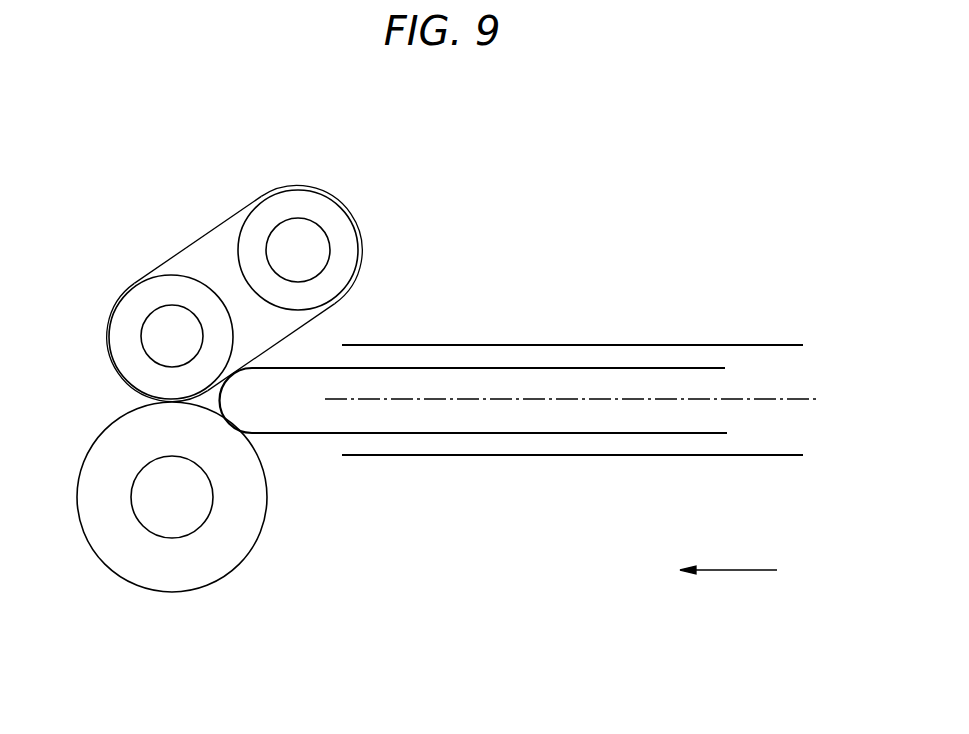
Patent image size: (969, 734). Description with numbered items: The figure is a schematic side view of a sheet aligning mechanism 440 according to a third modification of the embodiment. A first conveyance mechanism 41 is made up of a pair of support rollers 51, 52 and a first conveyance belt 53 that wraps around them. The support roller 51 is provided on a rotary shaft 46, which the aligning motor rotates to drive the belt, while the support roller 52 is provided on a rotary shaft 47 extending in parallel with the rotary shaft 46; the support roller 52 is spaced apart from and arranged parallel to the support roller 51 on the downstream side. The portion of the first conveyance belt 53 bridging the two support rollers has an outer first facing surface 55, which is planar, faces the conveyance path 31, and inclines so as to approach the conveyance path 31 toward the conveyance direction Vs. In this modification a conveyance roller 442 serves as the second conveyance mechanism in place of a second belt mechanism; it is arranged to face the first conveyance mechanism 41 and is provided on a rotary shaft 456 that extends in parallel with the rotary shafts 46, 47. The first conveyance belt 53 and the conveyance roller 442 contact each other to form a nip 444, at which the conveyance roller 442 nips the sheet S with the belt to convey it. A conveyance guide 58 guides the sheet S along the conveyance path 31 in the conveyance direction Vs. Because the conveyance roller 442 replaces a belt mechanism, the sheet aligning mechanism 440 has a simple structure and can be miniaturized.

The sheet aligning mechanism 440 is at (318, 128).
The first conveyance mechanism 41 is at (268, 181).
The first conveyance belt 53 is at (227, 215).
The first facing surface 55 is at (298, 337).
The support roller 51 is at (338, 217).
The rotary shaft 46 is at (331, 250).
The support roller 52 is at (134, 355).
The rotary shaft 47 is at (150, 307).
The conveyance roller 442 is at (244, 561).
The rotary shaft 456 is at (167, 538).
The nip 444 is at (171, 405).
The sheet S is at (587, 434).
The conveyance guide 58 is at (776, 345).
The conveyance path 31 is at (791, 399).
The conveyance direction Vs is at (728, 587).